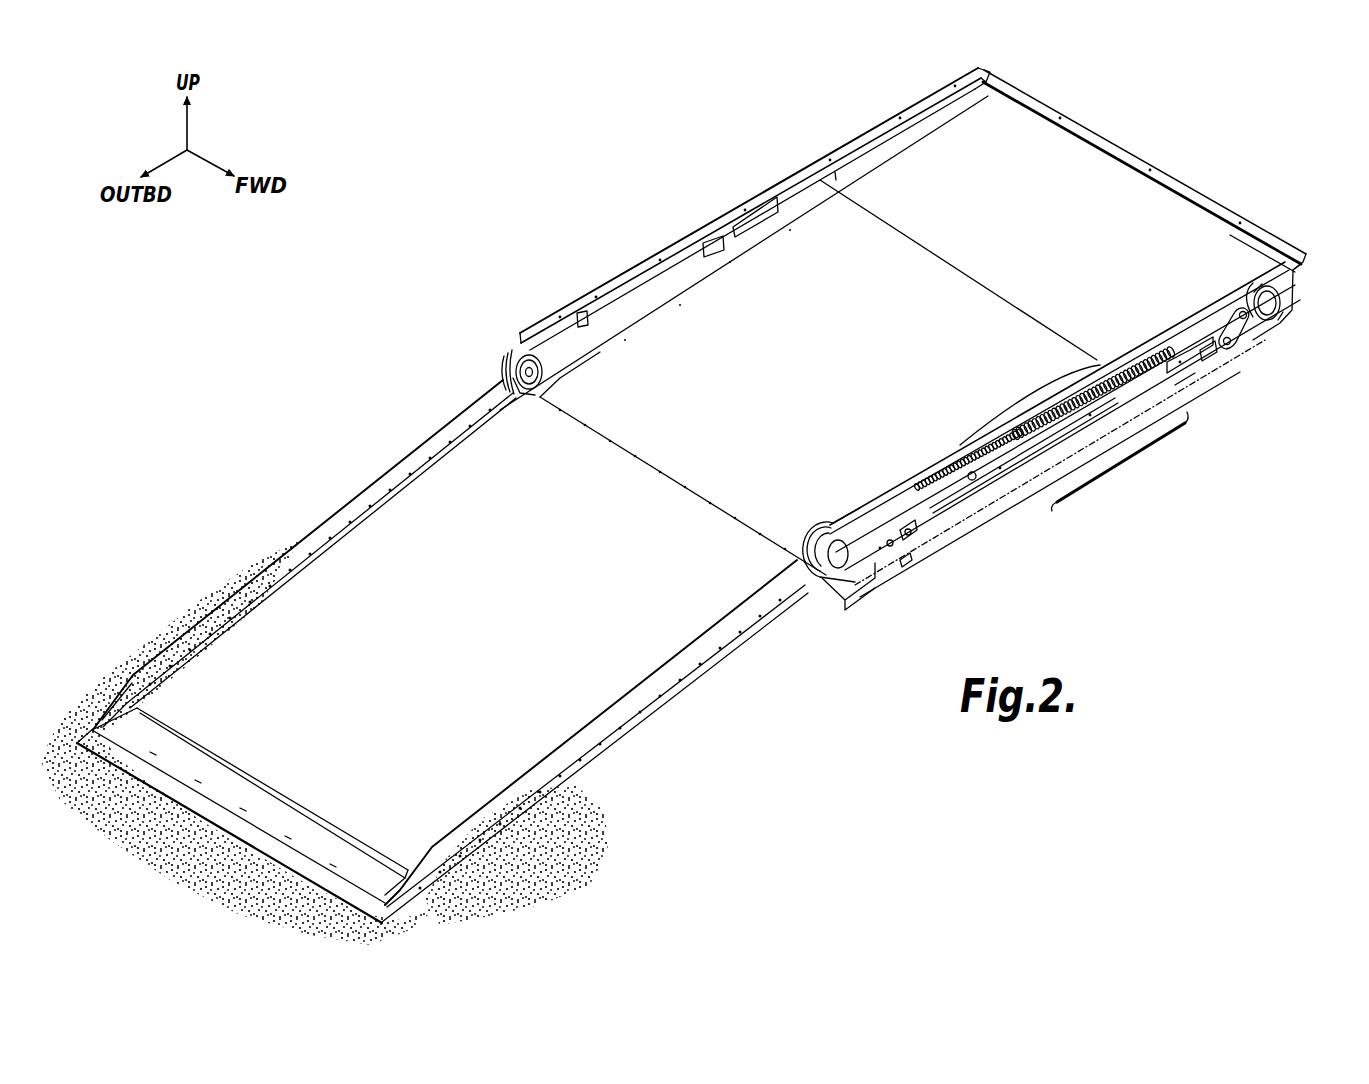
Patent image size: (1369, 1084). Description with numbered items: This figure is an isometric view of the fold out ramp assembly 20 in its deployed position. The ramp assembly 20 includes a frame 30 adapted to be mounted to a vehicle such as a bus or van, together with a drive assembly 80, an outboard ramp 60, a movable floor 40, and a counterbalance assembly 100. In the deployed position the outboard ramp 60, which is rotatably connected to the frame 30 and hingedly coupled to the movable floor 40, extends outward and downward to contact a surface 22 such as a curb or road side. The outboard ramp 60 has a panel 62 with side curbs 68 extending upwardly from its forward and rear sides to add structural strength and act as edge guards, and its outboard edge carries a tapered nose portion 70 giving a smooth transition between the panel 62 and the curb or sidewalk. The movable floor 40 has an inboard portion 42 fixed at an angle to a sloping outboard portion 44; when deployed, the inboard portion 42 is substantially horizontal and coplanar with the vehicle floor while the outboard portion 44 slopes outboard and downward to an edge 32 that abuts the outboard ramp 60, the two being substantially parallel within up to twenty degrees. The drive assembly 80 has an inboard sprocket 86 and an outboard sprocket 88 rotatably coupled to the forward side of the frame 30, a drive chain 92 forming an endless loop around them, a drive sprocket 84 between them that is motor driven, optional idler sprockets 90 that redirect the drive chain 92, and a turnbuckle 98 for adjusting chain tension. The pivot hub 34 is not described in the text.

The ramp assembly 20 is at (330, 405).
The surface 22 is at (582, 827).
The frame 30 is at (1292, 288).
The edge 32 is at (595, 422).
The pivot hub 34 is at (514, 368).
The movable floor 40 is at (1120, 461).
The inboard portion 42 is at (1113, 340).
The outboard portion 44 is at (1005, 405).
The outboard ramp 60 is at (442, 653).
The panel 62 is at (442, 810).
The side curbs 68 is at (252, 563).
The tapered nose portion 70 is at (212, 802).
The drive assembly 80 is at (1222, 372).
The drive sprocket 84 is at (1232, 346).
The inboard sprocket 86 is at (1270, 305).
The outboard sprocket 88 is at (842, 560).
The idler sprockets 90 is at (974, 480).
The drive chain 92 is at (932, 510).
The turnbuckle 98 is at (1088, 388).
The counterbalance assembly 100 is at (1020, 472).